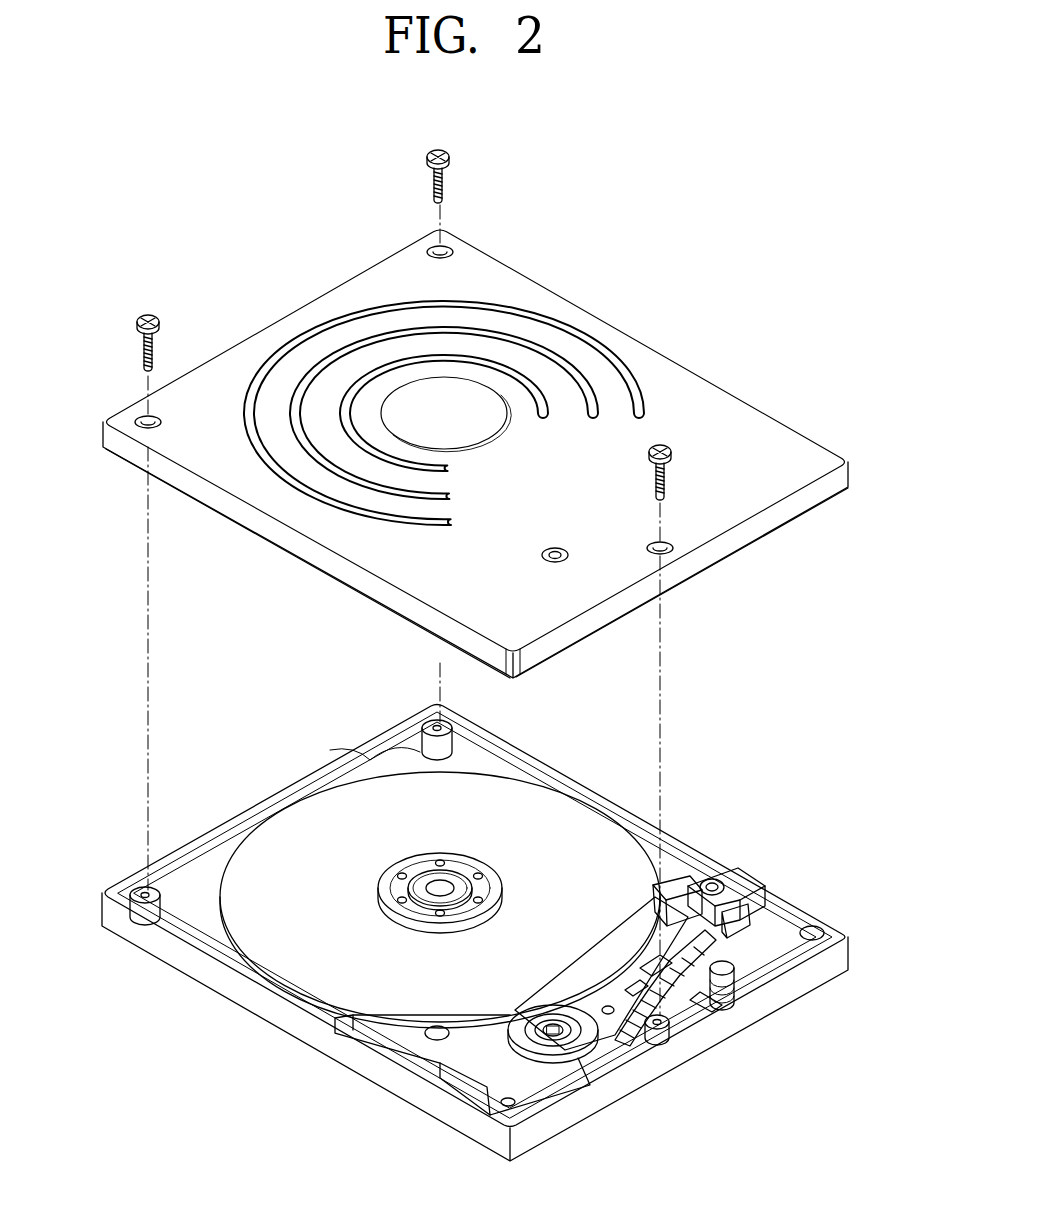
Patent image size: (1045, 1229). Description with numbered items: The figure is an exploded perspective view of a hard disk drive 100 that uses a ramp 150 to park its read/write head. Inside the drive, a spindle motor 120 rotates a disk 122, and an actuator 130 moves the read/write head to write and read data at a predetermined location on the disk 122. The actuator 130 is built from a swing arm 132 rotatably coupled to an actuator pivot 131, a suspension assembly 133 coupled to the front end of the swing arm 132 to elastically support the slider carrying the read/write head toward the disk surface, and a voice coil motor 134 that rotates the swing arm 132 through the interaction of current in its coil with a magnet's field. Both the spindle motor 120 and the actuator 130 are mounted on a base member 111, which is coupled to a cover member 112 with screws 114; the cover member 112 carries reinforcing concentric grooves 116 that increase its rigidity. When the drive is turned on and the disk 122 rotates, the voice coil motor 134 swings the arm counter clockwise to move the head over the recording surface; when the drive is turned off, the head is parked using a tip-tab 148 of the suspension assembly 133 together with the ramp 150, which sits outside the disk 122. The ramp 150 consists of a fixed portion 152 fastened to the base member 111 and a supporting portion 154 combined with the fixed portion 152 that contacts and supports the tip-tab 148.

The hard disk drive 100 is at (262, 268).
The base member 111 is at (798, 987).
The cover member 112 is at (813, 502).
The screws 114 is at (450, 180).
The reinforcing concentric grooves 116 is at (590, 340).
The spindle motor 120 is at (390, 875).
The disk 122 is at (375, 797).
The actuator 130 is at (633, 1037).
The actuator pivot 131 is at (558, 1033).
The swing arm 132 is at (712, 1016).
The suspension assembly 133 is at (717, 960).
The voice coil motor 134 is at (443, 1068).
The tip-tab 148 is at (742, 912).
The ramp 150 is at (636, 874).
The fixed portion 152 is at (728, 880).
The supporting portion 154 is at (683, 913).